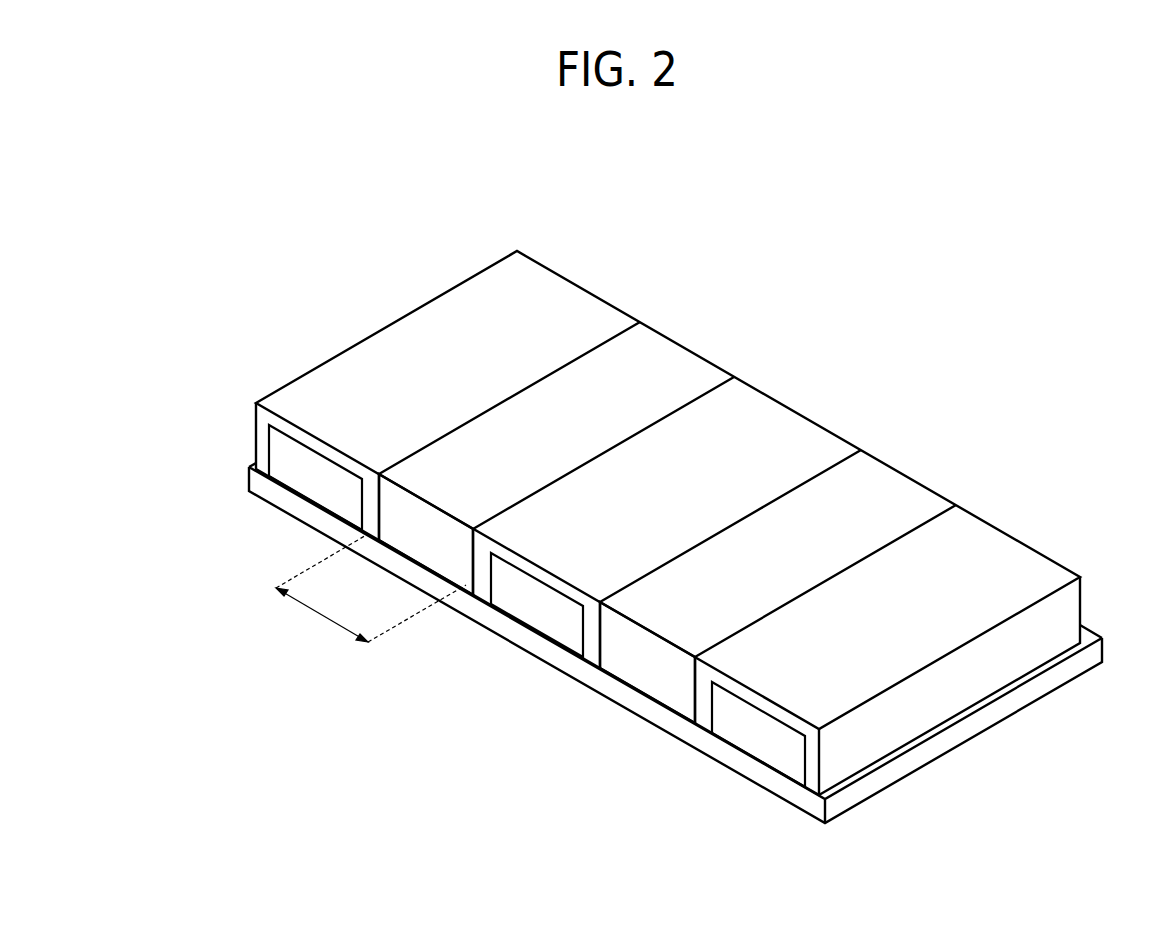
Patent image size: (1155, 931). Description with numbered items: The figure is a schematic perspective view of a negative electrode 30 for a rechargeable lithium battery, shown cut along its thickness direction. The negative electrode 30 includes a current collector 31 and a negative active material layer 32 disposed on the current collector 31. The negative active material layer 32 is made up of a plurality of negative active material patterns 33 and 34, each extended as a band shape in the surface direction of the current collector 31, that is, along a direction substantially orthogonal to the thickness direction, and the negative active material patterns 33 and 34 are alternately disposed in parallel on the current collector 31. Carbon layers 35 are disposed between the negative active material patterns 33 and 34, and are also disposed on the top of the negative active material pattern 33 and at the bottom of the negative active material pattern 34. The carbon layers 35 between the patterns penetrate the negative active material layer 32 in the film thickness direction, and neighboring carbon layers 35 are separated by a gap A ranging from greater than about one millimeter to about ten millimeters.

The negative electrode 30 is at (651, 515).
The current collector 31 is at (675, 643).
The negative active material layer 32 is at (640, 522).
The negative active material pattern 33 is at (529, 620).
The negative active material pattern 34 is at (525, 611).
The carbon layer 35 is at (668, 512).